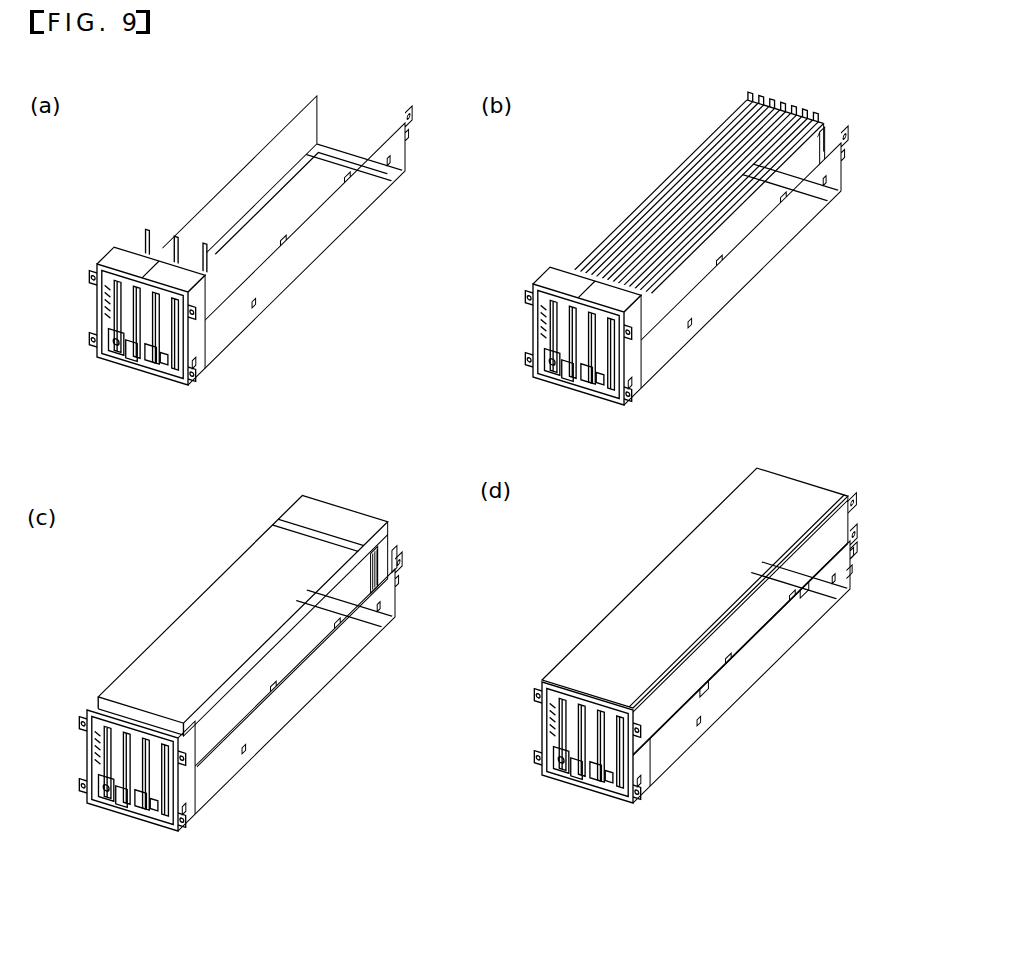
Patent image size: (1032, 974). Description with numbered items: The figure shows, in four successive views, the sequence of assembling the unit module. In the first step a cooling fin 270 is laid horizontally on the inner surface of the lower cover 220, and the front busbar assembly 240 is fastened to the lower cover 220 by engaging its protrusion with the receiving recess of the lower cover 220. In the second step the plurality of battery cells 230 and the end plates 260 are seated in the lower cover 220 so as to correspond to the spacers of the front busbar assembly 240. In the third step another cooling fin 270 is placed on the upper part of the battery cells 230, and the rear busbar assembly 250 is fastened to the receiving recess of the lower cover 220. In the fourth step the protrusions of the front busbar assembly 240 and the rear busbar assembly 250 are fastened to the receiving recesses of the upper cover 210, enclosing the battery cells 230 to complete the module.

The upper cover 210 is at (623, 612).
The lower cover 220 is at (272, 143).
The battery cells 230 is at (605, 215).
The front busbar assembly 240 is at (119, 250).
The rear busbar assembly 250 is at (362, 520).
The end plates 260 is at (830, 147).
The cooling fins 270 is at (237, 233).